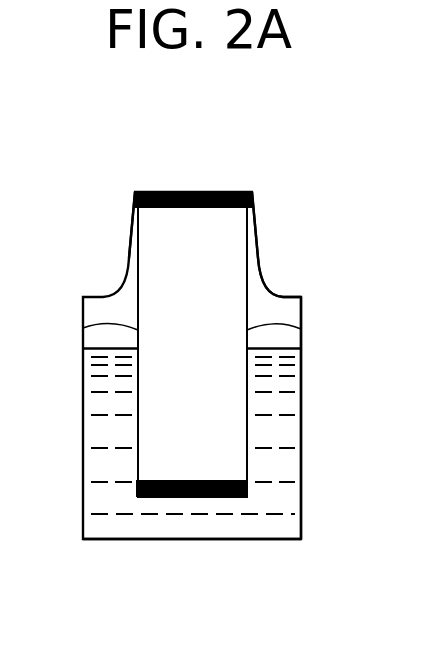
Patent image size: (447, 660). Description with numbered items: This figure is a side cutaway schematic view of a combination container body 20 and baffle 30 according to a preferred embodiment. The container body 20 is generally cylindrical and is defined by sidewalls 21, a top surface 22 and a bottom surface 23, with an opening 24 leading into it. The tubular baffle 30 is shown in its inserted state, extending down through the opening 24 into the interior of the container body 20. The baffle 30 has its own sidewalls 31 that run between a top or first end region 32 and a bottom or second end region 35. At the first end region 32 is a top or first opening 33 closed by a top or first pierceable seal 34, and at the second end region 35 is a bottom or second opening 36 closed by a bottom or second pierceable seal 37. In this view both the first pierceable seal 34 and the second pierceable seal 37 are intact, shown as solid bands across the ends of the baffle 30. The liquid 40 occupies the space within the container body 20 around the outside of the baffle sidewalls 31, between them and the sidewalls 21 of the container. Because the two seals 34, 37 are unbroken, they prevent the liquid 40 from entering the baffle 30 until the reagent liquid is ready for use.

The container body 20 is at (302, 425).
The sidewalls 21 is at (302, 475).
The top surface 22 is at (295, 293).
The bottom surface 23 is at (260, 539).
The opening 24 is at (138, 190).
The baffle 30 is at (83, 328).
The sidewalls 31 is at (301, 329).
The first end region 32 is at (256, 235).
The first opening 33 is at (232, 190).
The first pierceable seal 34 is at (193, 190).
The second end region 35 is at (150, 463).
The second opening 36 is at (162, 497).
The second pierceable seal 37 is at (203, 497).
The liquid 40 is at (110, 433).